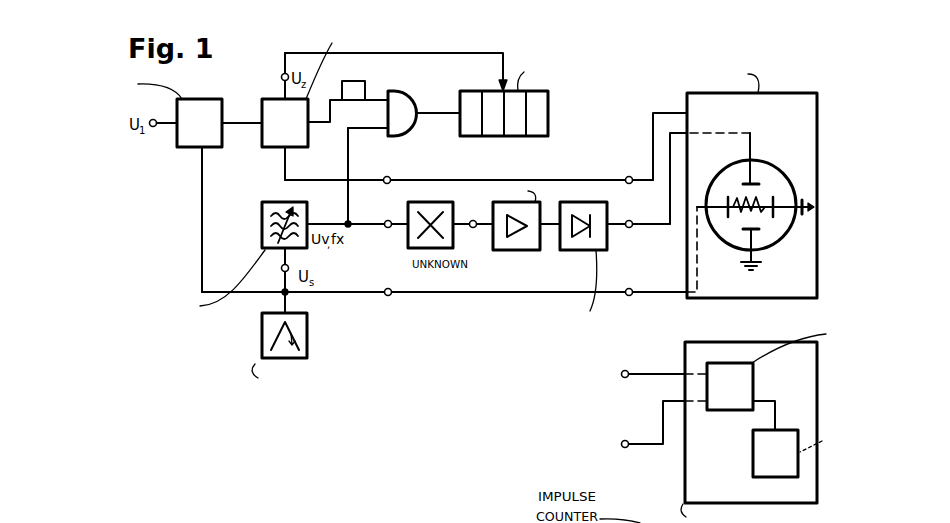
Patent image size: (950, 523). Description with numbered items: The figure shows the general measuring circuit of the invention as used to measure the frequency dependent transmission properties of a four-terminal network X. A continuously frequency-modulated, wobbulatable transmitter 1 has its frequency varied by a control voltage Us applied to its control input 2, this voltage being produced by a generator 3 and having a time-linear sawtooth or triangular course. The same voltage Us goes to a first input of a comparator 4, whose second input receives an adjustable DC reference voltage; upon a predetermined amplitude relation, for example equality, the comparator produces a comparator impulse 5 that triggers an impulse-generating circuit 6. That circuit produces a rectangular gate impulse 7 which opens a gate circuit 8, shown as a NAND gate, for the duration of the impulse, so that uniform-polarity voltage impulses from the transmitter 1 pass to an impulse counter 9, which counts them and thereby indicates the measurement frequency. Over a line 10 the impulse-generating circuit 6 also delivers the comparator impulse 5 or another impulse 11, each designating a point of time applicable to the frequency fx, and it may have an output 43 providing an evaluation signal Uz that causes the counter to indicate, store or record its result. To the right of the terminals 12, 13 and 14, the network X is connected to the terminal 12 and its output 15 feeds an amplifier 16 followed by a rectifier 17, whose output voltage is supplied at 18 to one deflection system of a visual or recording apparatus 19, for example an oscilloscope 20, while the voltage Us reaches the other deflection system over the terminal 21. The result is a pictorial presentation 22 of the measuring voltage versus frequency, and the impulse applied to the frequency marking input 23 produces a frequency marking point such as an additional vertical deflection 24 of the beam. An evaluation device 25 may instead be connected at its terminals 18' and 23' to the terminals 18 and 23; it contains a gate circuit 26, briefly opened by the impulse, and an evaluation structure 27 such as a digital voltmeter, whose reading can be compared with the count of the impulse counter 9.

The frequency-modulated transmitter 1 is at (262, 228).
The control input 2 is at (278, 270).
The generator 3 is at (262, 335).
The comparator 4 is at (168, 184).
The comparator impulse 5 is at (278, 139).
The impulse-generating circuit 6 is at (354, 77).
The gate impulse 7 is at (359, 84).
The gate circuit 8 is at (402, 108).
The impulse counter 9 is at (535, 118).
The line 10 is at (285, 170).
The impulse 11 is at (362, 176).
The terminal 12 is at (387, 214).
The terminal 13 is at (391, 177).
The terminal 14 is at (387, 282).
The output 15 is at (472, 214).
The amplifier 16 is at (516, 230).
The rectifier 17 is at (579, 261).
The terminal 18 is at (653, 180).
The visual or recording apparatus 19 is at (767, 285).
The oscilloscope 20 is at (764, 163).
The terminal 21 is at (628, 282).
The pictorial presentation 22 is at (759, 208).
The frequency marking input 23 is at (653, 148).
The additional deflection 24 is at (740, 195).
The evaluation device 25 is at (702, 352).
The gate circuit 26 is at (738, 388).
The evaluation structure 27 is at (768, 455).
The output 43 is at (282, 79).
The terminal 23' is at (650, 377).
The terminal 18' is at (650, 428).